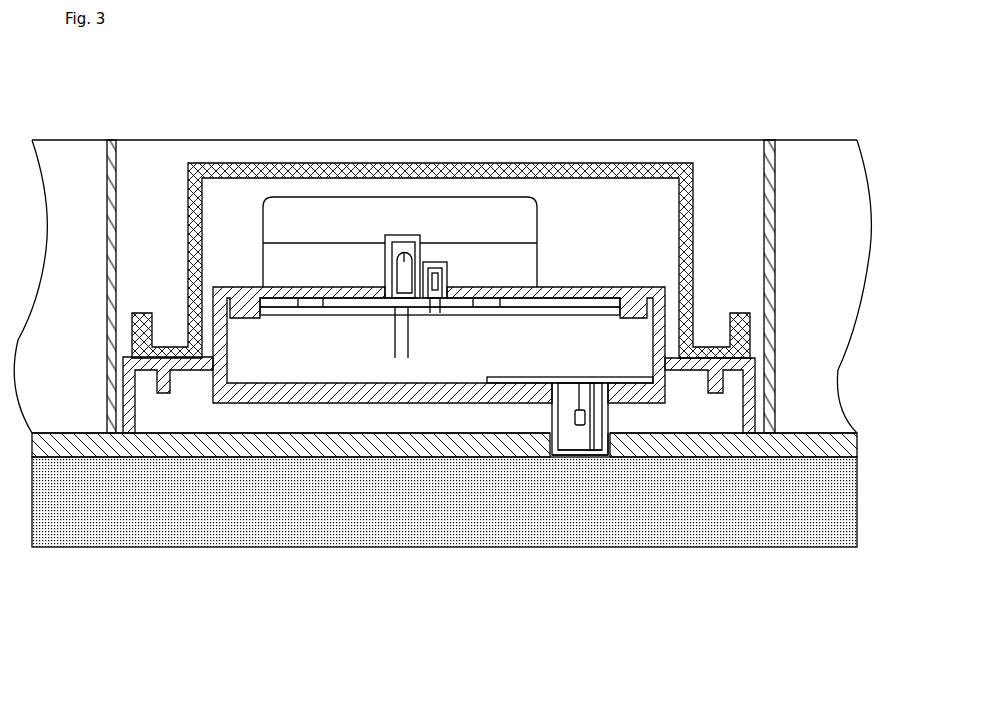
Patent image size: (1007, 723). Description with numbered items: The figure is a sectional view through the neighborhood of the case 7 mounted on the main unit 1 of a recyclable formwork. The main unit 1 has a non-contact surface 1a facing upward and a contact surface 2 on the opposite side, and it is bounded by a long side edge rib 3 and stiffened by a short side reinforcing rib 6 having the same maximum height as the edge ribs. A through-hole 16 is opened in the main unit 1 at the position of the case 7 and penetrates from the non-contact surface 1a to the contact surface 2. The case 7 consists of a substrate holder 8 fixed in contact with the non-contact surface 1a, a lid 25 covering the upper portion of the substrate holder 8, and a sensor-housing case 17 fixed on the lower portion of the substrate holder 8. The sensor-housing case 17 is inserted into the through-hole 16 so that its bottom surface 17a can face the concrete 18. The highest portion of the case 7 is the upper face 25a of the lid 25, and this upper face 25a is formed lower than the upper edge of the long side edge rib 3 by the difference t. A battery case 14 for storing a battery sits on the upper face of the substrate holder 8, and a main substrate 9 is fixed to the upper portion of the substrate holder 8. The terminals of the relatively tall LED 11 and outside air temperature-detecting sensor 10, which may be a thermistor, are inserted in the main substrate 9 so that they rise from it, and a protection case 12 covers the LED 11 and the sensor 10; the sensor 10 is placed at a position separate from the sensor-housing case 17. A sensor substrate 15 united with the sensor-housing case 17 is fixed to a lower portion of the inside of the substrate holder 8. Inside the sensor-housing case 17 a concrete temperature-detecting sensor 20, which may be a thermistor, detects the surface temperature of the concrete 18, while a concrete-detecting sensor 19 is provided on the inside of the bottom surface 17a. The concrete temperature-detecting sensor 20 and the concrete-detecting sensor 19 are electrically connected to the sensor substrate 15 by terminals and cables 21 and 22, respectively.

The main unit 1 is at (442, 220).
The non-contact surface 1a is at (809, 432).
The contact surface 2 is at (707, 458).
The long side edge rib 3 is at (607, 139).
The short side reinforcing rib 6 is at (108, 139).
The case 7 is at (221, 158).
The substrate holder 8 is at (420, 384).
The main substrate 9 is at (542, 310).
The outside air temperature-detecting sensor 10 is at (433, 262).
The LED 11 is at (407, 240).
The protection case 12 is at (417, 238).
The battery case 14 is at (325, 173).
The sensor substrate 15 is at (520, 382).
The through-hole 16 is at (612, 453).
The sensor-housing case 17 is at (553, 428).
The bottom surface 17a is at (610, 458).
The concrete 18 is at (793, 500).
The concrete-detecting sensor 19 is at (573, 458).
The concrete temperature-detecting sensor 20 is at (580, 412).
The terminals and cables 21 is at (591, 418).
The terminals and cables 22 is at (577, 383).
The lid 25 is at (655, 176).
The upper face 25a is at (537, 161).
The difference t is at (278, 190).